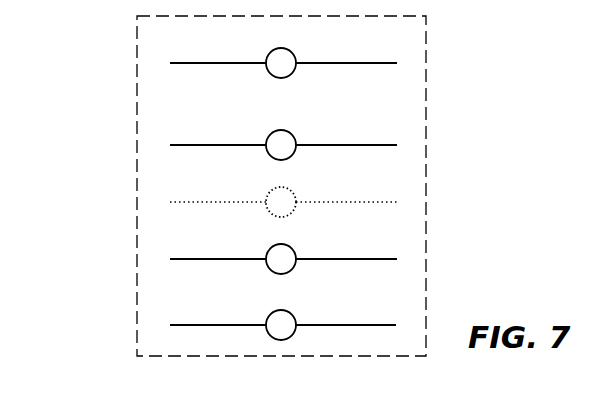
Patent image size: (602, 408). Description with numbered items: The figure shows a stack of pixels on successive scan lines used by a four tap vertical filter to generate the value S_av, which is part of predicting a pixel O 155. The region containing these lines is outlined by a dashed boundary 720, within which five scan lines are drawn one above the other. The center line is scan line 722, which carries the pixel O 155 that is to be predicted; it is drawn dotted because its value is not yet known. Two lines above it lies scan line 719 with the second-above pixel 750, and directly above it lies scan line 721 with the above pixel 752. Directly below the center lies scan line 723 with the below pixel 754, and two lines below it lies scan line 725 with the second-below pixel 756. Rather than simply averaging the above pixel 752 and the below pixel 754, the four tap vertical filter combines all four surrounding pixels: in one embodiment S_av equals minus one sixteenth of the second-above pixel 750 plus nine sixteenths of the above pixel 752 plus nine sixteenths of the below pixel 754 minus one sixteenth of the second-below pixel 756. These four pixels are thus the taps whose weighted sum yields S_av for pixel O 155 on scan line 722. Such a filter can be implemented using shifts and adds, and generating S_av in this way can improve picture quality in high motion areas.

The field window 720 is at (413, 28).
The scan line 719 is at (380, 66).
The scan line 721 is at (377, 147).
The scan line 722 is at (377, 204).
The scan line 723 is at (375, 260).
The scan line 725 is at (386, 322).
The pixel N2 750 is at (268, 54).
The pixel N 752 is at (268, 136).
The pixel O 155 is at (268, 193).
The pixel S 754 is at (268, 250).
The pixel S2 756 is at (268, 315).